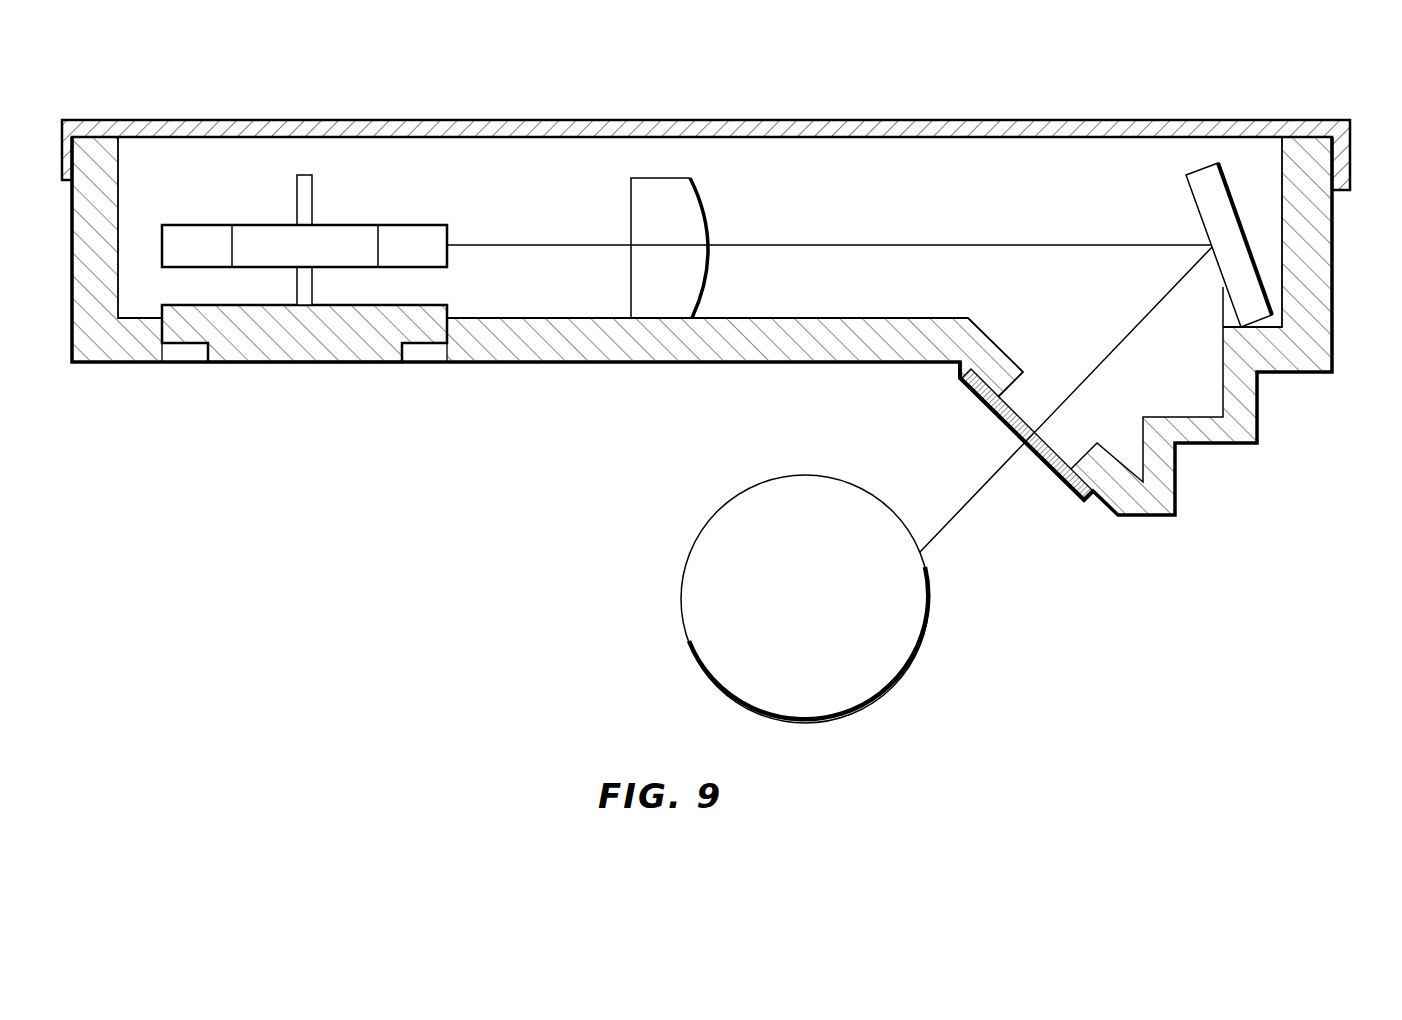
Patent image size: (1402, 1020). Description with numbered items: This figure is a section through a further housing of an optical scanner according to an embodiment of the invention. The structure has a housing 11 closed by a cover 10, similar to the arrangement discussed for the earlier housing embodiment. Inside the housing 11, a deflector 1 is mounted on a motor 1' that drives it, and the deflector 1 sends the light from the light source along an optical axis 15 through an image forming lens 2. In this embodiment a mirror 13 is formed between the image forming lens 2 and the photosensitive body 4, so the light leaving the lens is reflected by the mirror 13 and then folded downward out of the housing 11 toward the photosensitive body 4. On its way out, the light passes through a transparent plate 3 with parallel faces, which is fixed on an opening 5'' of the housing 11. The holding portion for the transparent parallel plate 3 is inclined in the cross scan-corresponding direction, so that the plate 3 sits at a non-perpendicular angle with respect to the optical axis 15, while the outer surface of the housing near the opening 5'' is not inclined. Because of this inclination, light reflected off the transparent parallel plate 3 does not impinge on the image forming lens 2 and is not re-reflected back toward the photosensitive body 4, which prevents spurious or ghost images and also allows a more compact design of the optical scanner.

The deflector 1 is at (304, 240).
The motor 1' is at (304, 355).
The image forming lens 2 is at (697, 206).
The transparent plate with parallel faces 3 is at (1057, 472).
The photosensitive body 4 is at (920, 657).
The opening 5'' is at (1019, 431).
The cover 10 is at (148, 121).
The housing 11 is at (1330, 340).
The mirror 13 is at (1198, 186).
The optical axis 15 is at (1124, 339).